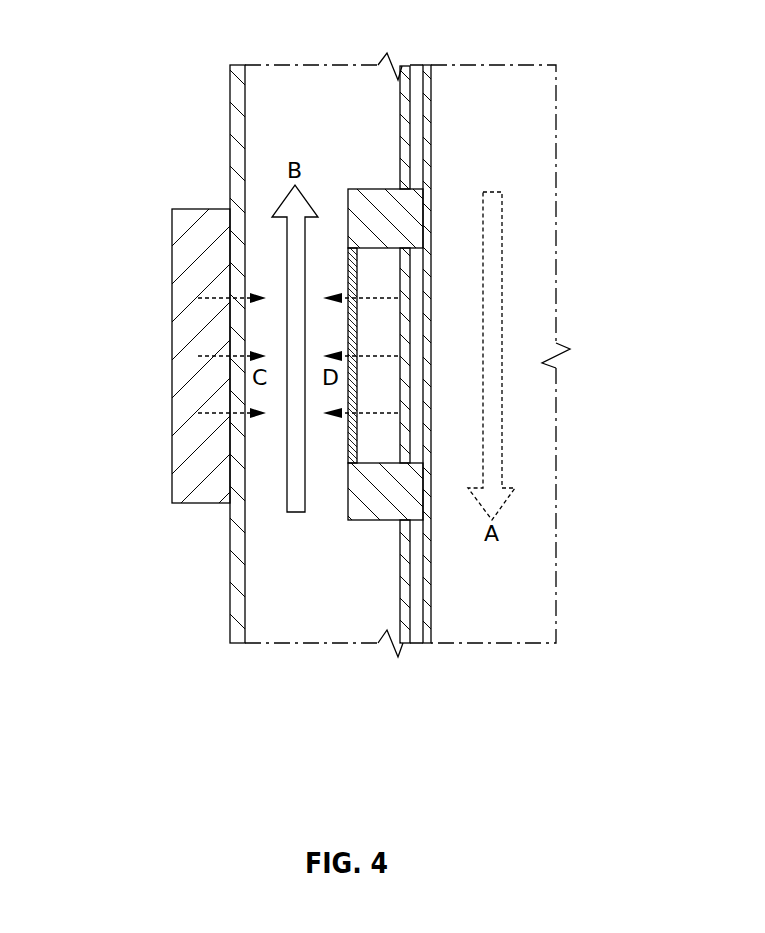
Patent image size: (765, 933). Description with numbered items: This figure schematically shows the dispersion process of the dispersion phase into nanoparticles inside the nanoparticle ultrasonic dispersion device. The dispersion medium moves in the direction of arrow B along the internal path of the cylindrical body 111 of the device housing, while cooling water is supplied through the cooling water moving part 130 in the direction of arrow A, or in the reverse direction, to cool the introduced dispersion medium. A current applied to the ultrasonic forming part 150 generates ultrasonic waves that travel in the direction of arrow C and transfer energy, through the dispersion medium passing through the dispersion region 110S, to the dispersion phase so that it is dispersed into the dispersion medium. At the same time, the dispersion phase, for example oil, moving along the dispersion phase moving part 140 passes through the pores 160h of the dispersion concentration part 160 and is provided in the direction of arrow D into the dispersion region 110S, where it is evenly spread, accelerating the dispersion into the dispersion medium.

The dispersion region 110S is at (318, 327).
The cylindrical body 111 is at (237, 627).
The cooling water moving part 130 is at (498, 122).
The dispersion phase moving part 140 is at (405, 122).
The ultrasonic forming part 150 is at (202, 503).
The dispersion concentration part 160 is at (377, 503).
The pores 160h is at (347, 437).